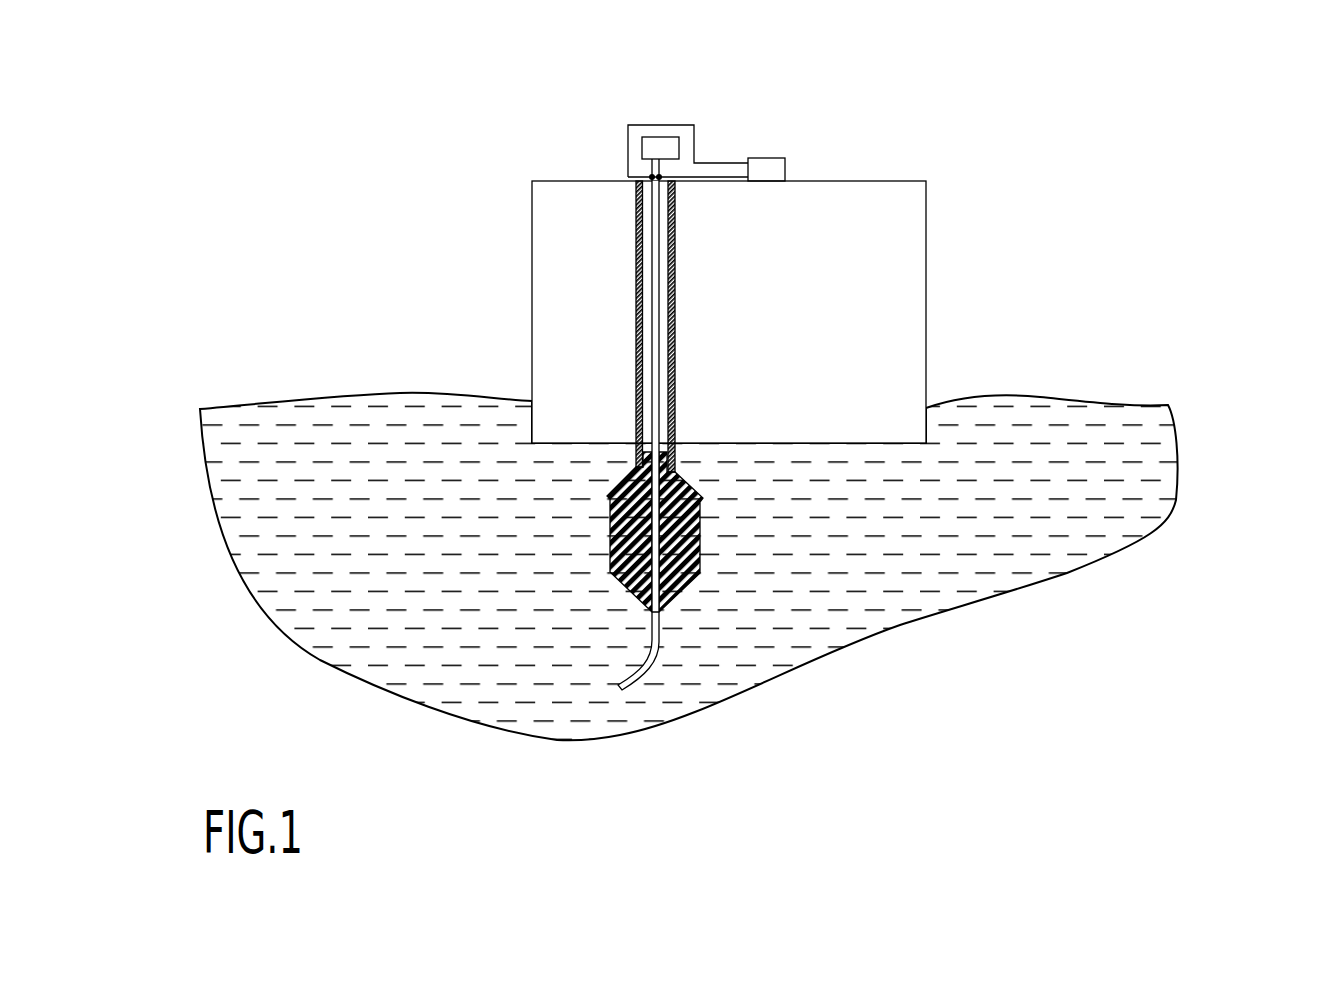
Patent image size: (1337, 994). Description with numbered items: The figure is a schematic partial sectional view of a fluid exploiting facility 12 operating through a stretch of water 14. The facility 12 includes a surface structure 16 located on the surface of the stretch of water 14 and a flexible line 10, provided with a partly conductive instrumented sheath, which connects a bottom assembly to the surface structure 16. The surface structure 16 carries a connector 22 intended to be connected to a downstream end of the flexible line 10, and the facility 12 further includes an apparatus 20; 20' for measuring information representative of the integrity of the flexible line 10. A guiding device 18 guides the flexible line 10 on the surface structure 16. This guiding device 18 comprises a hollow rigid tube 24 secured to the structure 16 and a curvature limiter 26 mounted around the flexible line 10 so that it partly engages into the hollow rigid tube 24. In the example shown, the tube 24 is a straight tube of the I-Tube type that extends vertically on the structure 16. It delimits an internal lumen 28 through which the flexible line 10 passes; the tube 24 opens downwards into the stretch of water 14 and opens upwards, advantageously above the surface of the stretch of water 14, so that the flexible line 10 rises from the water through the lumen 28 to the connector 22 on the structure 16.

The flexible line 10 is at (691, 636).
The fluid exploiting facility 12 is at (919, 250).
The stretch of water 14 is at (690, 570).
The surface structure 16 is at (926, 311).
The guiding device 18 is at (618, 433).
The measuring apparatus 20 is at (776, 153).
The measuring apparatus 20' is at (706, 153).
The connector 22 is at (660, 137).
The hollow rigid tube 24 is at (676, 322).
The curvature limiter 26 is at (610, 528).
The internal lumen 28 is at (637, 377).